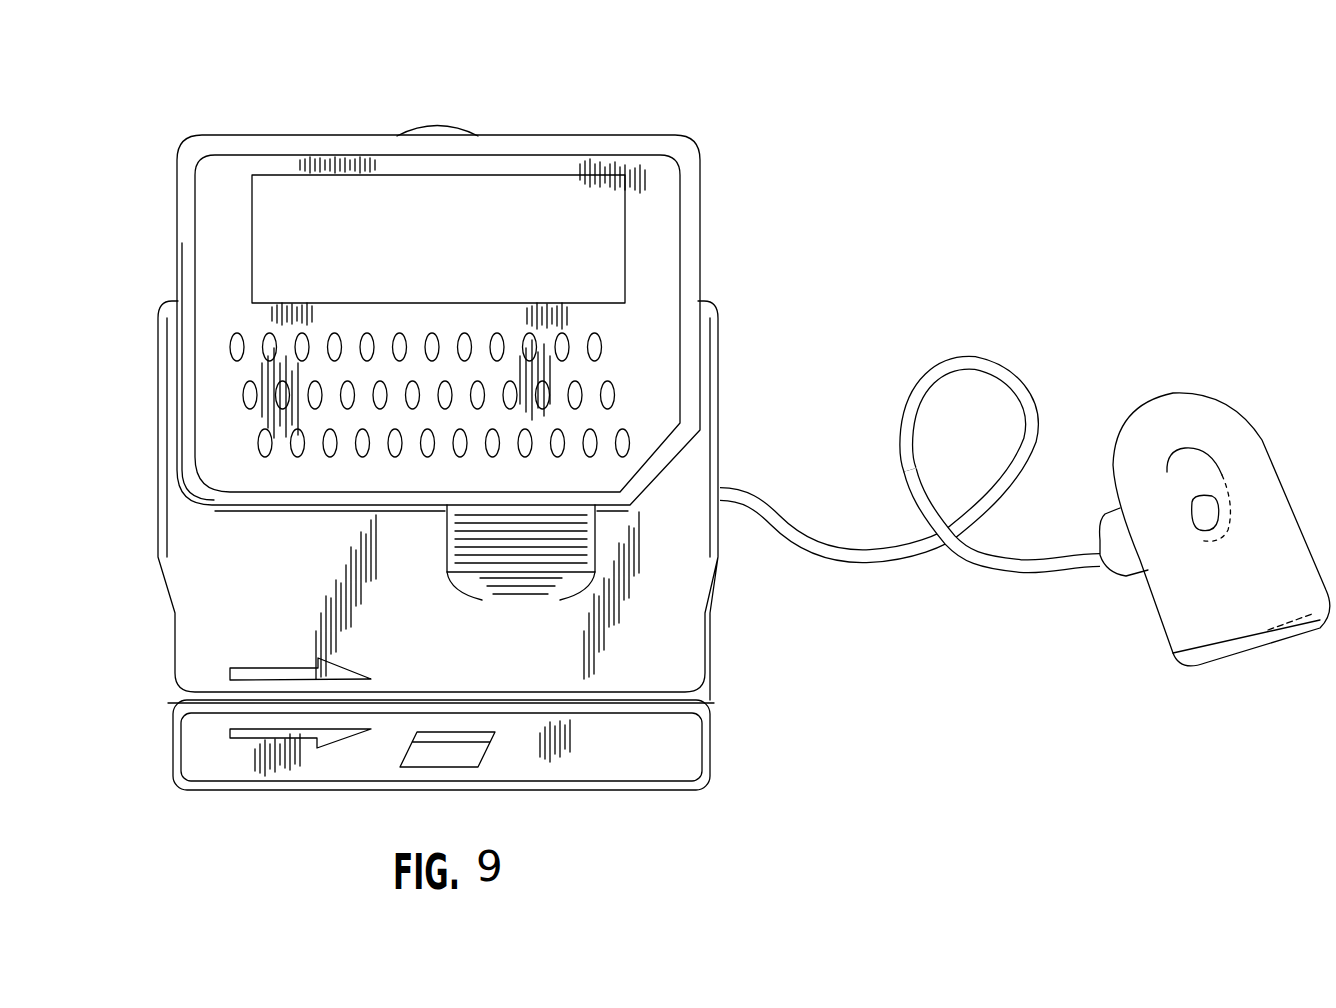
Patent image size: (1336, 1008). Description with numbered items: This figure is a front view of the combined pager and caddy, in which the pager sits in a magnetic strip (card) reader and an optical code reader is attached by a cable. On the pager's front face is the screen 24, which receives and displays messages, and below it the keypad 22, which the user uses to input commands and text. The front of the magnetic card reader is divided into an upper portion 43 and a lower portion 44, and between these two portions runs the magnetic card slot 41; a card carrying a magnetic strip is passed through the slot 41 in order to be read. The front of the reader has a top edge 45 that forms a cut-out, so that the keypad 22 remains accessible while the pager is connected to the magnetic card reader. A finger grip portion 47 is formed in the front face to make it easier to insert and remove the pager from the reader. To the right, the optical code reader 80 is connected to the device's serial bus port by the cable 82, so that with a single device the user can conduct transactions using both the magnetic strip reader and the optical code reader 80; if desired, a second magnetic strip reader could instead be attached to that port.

The screen 24 is at (300, 192).
The keypad 22 is at (598, 350).
The upper portion 43 is at (700, 478).
The top edge 45 is at (260, 513).
The finger grip portion 47 is at (523, 578).
The magnetic card slot 41 is at (677, 703).
The lower portion 44 is at (693, 757).
The cable 82 is at (993, 378).
The optical code reader 80 is at (1220, 410).